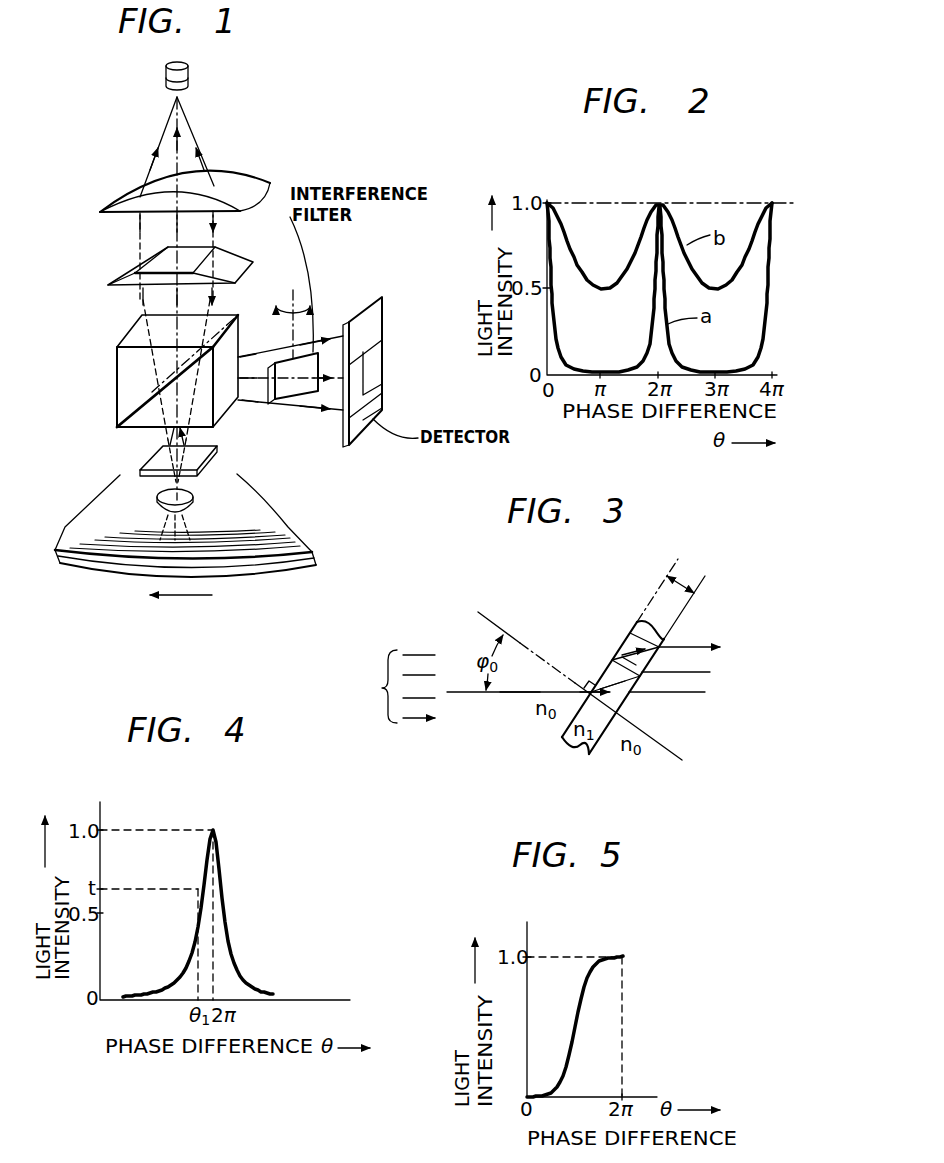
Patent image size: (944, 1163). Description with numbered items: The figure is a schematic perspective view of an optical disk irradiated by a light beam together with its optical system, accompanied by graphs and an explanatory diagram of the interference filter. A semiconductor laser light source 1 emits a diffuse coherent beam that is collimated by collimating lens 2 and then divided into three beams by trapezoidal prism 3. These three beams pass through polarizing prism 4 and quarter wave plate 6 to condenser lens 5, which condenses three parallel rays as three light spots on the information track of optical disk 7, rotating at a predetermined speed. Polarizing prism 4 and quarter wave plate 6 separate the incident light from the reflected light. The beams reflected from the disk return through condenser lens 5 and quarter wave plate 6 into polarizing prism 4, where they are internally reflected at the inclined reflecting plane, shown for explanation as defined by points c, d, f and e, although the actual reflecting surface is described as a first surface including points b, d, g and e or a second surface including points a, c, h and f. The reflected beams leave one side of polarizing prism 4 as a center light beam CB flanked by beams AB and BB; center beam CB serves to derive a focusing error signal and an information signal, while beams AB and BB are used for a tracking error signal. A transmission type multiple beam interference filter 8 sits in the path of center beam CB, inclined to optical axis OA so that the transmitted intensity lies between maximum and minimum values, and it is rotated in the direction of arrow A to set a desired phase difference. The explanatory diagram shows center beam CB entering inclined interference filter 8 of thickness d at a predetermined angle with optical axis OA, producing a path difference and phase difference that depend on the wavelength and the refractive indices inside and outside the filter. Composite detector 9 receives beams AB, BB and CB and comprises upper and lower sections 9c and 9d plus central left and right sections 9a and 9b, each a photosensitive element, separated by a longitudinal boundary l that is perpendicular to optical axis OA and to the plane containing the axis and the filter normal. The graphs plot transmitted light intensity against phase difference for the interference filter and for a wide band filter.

In FIG. 1, the semiconductor laser light source 1 is at (188, 83).
In FIG. 1, the collimating lens 2 is at (126, 196).
In FIG. 1, the trapezoidal prism 3 is at (128, 272).
In FIG. 1, the polarizing prism 4 is at (128, 341).
In FIG. 1, the condenser lens 5 is at (156, 495).
In FIG. 1, the quarter wave plate 6 is at (141, 465).
In FIG. 1, the optical disk 7 is at (270, 531).
In FIG. 1, the interference filter 8 is at (293, 392).
In FIG. 3, the interference filter 8 is at (603, 723).
In FIG. 1, the composite optical detector 9 is at (386, 347).
In FIG. 1, the left section 9a is at (360, 398).
In FIG. 1, the right section 9b is at (372, 374).
In FIG. 1, the upper section 9c is at (376, 321).
In FIG. 1, the lower section 9d is at (366, 433).
In FIG. 1, the point a is at (115, 352).
In FIG. 1, the point b is at (137, 314).
In FIG. 1, the point c is at (221, 349).
In FIG. 1, the point d is at (244, 312).
In FIG. 3, the point d is at (681, 585).
In FIG. 1, the point e is at (115, 428).
In FIG. 1, the point f is at (136, 396).
In FIG. 1, the point g is at (218, 431).
In FIG. 1, the point h is at (245, 402).
In FIG. 1, the arrow A is at (300, 278).
In FIG. 1, the side beam AB is at (310, 360).
In FIG. 1, the side beam BB is at (327, 413).
In FIG. 1, the center light beam CB is at (265, 386).
In FIG. 3, the center light beam CB is at (393, 686).
In FIG. 3, the optical axis OA is at (498, 695).
In FIG. 1, the boundary l is at (371, 357).